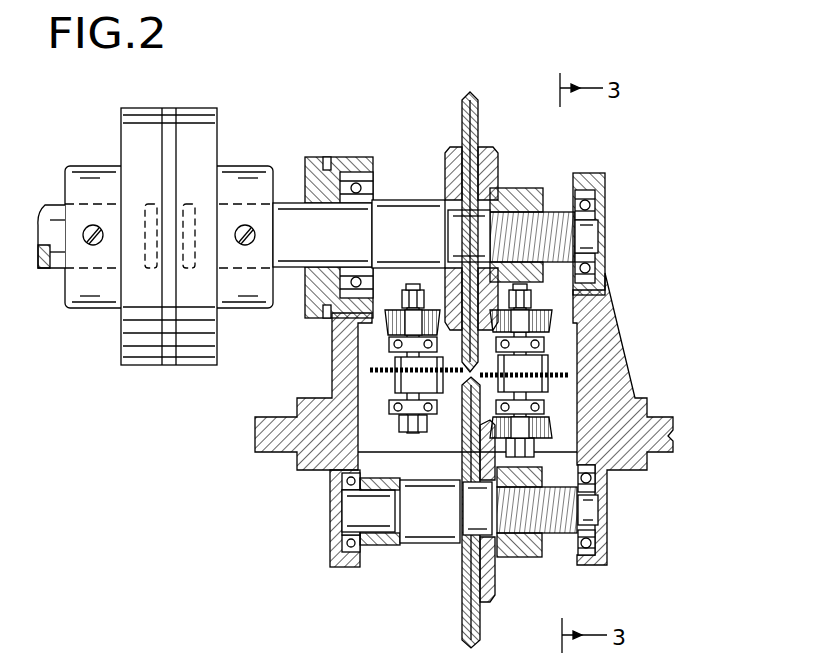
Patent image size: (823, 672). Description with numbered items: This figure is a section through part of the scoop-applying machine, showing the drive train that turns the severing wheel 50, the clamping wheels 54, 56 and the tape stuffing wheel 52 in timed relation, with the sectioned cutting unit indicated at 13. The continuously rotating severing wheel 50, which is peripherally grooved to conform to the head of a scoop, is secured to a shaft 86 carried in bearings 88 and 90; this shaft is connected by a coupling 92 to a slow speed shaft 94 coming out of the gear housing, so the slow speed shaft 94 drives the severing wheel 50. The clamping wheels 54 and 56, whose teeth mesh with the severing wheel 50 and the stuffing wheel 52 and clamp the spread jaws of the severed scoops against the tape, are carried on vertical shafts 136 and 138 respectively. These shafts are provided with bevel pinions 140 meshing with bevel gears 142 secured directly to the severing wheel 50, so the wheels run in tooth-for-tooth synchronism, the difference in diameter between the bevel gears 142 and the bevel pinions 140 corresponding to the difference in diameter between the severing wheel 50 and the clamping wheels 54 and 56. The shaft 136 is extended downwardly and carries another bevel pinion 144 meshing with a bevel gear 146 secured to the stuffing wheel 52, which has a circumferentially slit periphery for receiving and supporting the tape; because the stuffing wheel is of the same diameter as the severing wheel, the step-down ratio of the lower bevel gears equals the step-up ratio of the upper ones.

The cutting unit 13 is at (465, 470).
The severing wheel 50 is at (466, 95).
The stuffing wheel 52 is at (467, 645).
The clamping wheel 54 is at (563, 375).
The clamping wheel 56 is at (380, 370).
The shaft 86 is at (405, 200).
The bearing 88 is at (340, 157).
The bearing 90 is at (590, 173).
The coupling 92 is at (157, 108).
The slow speed shaft 94 is at (55, 213).
The shaft 136 is at (539, 368).
The shaft 138 is at (420, 291).
The bevel pinion 140 is at (383, 322).
The bevel gear 142 is at (443, 160).
The bevel pinion 144 is at (550, 427).
The bevel gear 146 is at (495, 590).